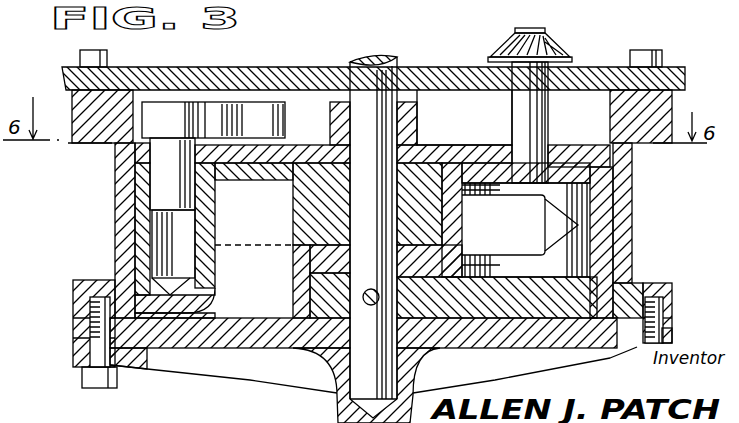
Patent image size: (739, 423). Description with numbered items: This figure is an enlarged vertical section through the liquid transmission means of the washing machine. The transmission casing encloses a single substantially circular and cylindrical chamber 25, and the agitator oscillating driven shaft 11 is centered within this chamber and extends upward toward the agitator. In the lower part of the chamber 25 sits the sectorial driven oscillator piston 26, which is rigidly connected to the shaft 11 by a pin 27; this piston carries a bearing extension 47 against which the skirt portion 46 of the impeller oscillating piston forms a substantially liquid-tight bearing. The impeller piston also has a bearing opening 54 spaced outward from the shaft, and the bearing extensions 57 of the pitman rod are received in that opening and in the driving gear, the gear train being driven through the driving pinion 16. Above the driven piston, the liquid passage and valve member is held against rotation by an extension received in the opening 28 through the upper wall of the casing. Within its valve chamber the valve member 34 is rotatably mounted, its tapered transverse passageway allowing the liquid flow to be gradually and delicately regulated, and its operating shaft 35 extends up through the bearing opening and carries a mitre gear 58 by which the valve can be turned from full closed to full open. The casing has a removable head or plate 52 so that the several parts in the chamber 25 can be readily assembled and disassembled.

The agitator oscillating driven shaft 11 is at (383, 63).
The driving pinion 16 is at (257, 340).
The circular chamber 25 is at (613, 232).
The sectorial driven oscillator piston 26 is at (630, 277).
The pin 27 is at (374, 307).
The opening 28 is at (485, 160).
The valve member 34 is at (590, 198).
The operating shaft 35 is at (548, 123).
The skirt portion 46 is at (308, 280).
The bearing extension 47 is at (308, 293).
The removable head or plate 52 is at (305, 342).
The bearing opening 54 is at (163, 242).
The bearing extensions 57 is at (160, 185).
The mitre gear 58 is at (560, 40).